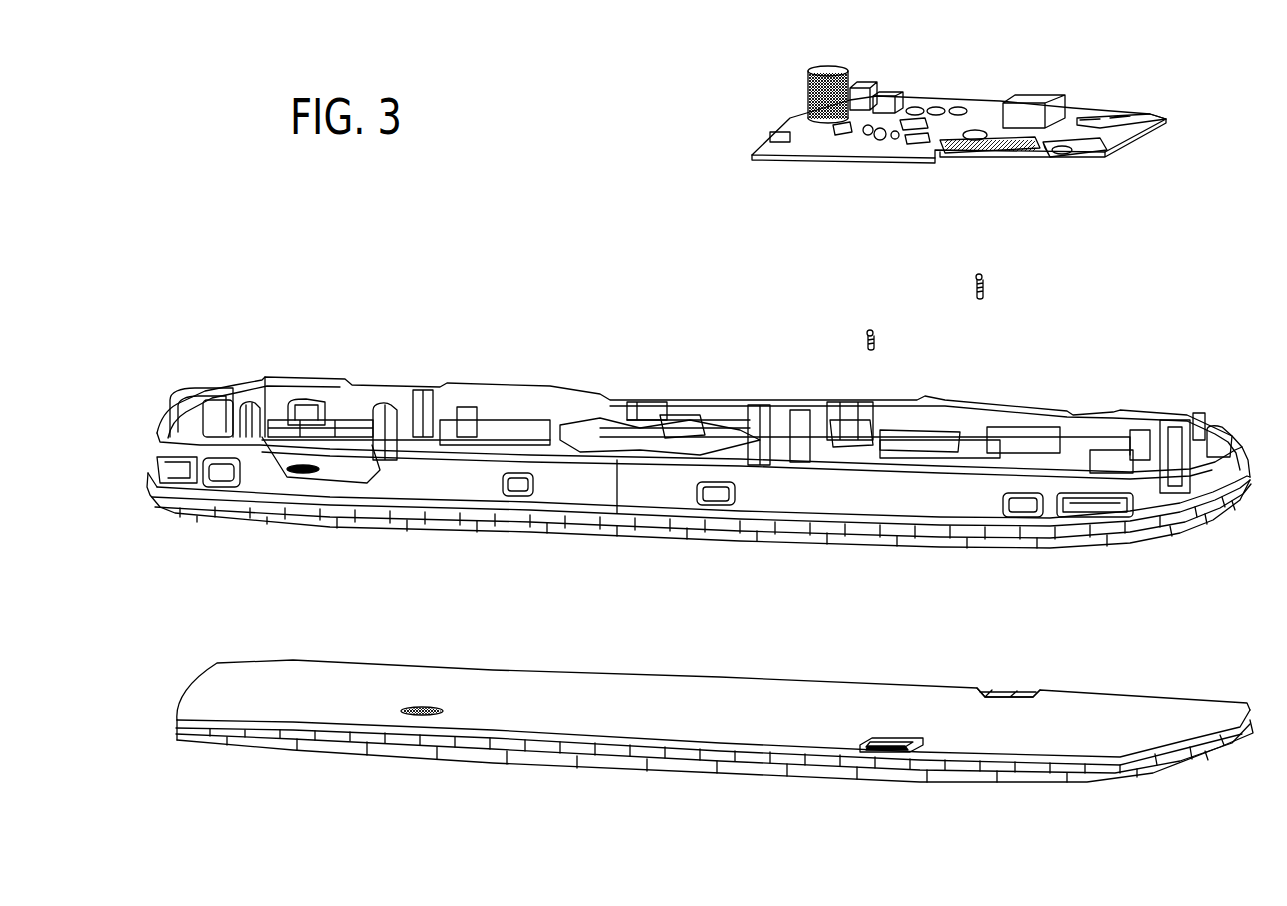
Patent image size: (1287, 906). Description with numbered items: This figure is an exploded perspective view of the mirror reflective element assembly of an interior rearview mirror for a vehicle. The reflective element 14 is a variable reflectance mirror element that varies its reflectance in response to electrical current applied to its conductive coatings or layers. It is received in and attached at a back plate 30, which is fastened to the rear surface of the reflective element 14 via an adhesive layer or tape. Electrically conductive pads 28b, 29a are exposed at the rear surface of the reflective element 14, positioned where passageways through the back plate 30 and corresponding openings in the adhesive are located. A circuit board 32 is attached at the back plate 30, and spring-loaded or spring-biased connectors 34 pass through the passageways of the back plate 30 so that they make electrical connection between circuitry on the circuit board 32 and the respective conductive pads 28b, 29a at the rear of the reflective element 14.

The reflective element 14 is at (753, 695).
The electrically conductive pad 28b is at (1002, 690).
The electrically conductive pad 29a is at (897, 742).
The back plate 30 is at (1122, 383).
The circuit board 32 is at (999, 72).
The spring-biased connector 34 is at (866, 332).